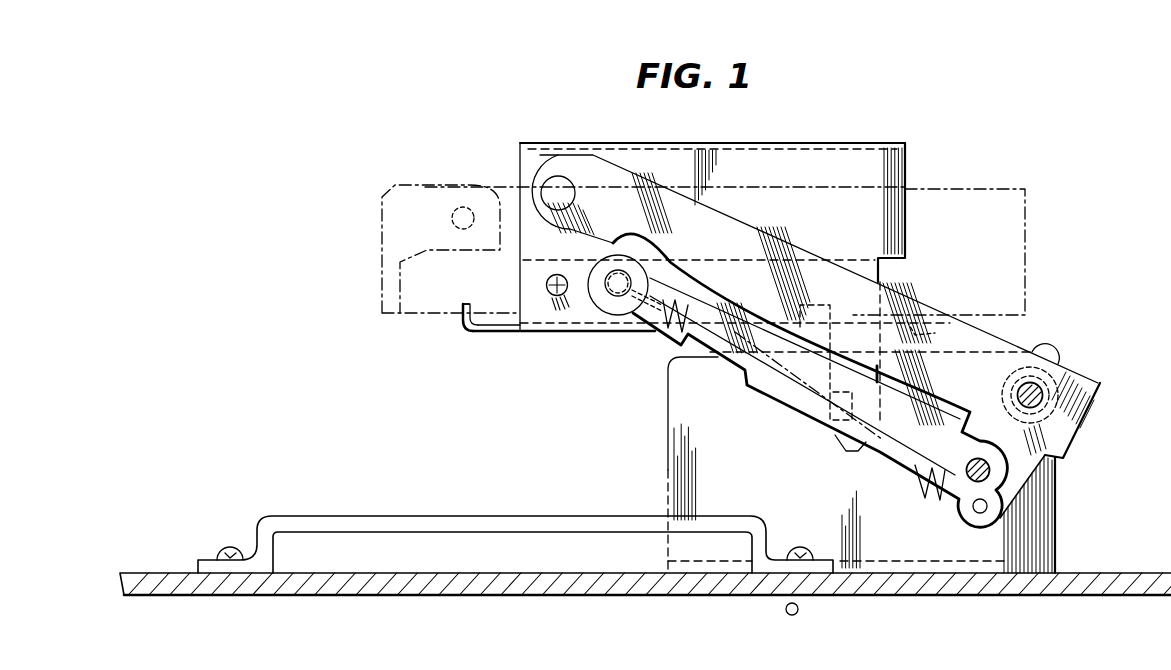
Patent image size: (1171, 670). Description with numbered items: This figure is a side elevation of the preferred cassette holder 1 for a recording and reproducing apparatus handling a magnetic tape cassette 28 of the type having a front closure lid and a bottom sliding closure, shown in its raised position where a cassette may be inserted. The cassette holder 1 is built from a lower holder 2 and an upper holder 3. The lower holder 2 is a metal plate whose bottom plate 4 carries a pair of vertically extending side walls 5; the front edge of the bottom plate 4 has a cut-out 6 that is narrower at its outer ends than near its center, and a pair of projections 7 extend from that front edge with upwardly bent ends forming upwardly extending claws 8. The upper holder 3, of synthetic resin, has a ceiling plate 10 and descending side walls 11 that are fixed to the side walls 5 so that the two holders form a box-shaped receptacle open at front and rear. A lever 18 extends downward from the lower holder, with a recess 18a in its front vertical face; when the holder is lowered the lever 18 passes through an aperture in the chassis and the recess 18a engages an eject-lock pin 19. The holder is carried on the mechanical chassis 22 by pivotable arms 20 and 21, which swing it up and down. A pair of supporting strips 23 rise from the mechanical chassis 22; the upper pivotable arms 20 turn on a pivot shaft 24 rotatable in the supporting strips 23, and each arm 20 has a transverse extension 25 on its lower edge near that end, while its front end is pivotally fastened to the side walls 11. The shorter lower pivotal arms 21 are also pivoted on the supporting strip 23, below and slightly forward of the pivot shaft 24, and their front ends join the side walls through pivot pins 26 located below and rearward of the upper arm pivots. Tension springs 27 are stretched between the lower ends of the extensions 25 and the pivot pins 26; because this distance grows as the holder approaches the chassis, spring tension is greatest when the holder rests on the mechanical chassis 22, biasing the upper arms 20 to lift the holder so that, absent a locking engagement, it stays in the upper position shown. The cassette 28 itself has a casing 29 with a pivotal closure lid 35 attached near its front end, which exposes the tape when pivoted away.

The cassette holder 1 is at (636, 143).
The lower holder 2 is at (497, 332).
The upper holder 3 is at (883, 155).
The bottom plate 4 is at (925, 320).
The side walls 5 is at (818, 272).
The cut-out 6 is at (563, 322).
The projections 7 is at (467, 333).
The claws 8 is at (464, 304).
The ceiling plate 10 is at (548, 143).
The side walls 11 is at (752, 160).
The lever 18 is at (851, 451).
The recess 18a is at (848, 394).
The eject-lock pin 19 is at (798, 611).
The upper pivotable arms 20 is at (1017, 343).
The lower pivotal arms 21 is at (950, 433).
The mechanical chassis 22 is at (1080, 590).
The supporting strips 23 is at (1048, 510).
The pivot shaft 24 is at (1043, 386).
The transverse extension 25 is at (1020, 482).
The pivot pins 26 is at (622, 280).
The tension springs 27 is at (720, 360).
The magnetic tape cassette 28 is at (1008, 190).
The casing 29 is at (950, 189).
The pivotal closure lid 35 is at (428, 190).